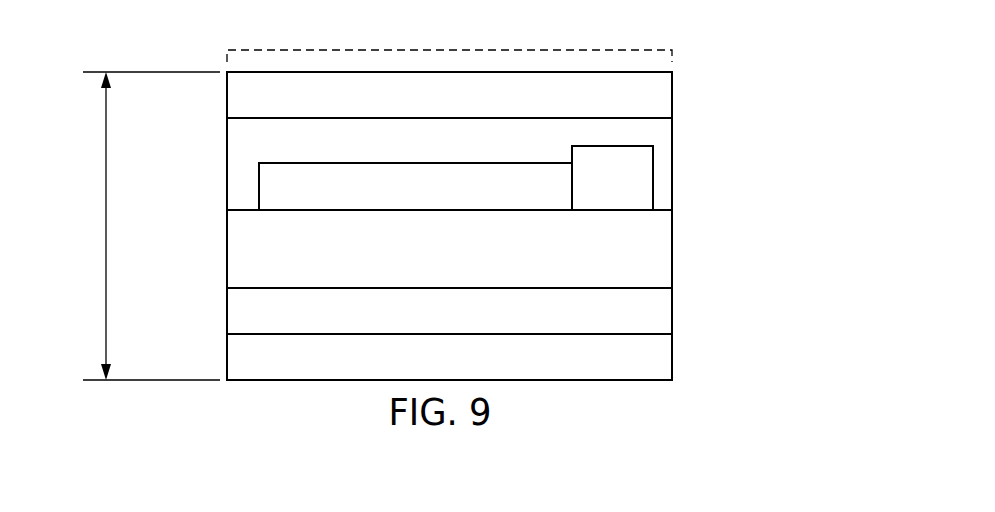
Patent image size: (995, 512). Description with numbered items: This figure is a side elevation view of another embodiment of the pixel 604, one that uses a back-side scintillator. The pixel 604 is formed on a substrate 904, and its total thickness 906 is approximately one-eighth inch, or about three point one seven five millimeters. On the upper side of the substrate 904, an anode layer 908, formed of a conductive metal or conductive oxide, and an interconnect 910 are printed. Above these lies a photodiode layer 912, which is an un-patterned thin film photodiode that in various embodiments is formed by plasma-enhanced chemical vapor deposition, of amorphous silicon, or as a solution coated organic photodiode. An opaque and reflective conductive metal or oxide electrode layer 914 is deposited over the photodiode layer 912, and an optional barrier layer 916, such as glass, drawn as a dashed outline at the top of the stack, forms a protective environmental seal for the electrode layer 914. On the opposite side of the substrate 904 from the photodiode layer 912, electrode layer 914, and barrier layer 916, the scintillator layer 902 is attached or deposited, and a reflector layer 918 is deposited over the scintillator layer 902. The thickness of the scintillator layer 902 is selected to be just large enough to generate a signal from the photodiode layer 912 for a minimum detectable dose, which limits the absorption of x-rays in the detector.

The pixel 604 is at (694, 44).
The barrier layer 916 is at (227, 55).
The electrode layer 914 is at (672, 97).
The photodiode layer 912 is at (672, 137).
The anode layer 908 is at (259, 188).
The interconnect 910 is at (653, 188).
The substrate 904 is at (672, 250).
The scintillator layer 902 is at (672, 312).
The reflector layer 918 is at (672, 357).
The total thickness 906 is at (106, 283).